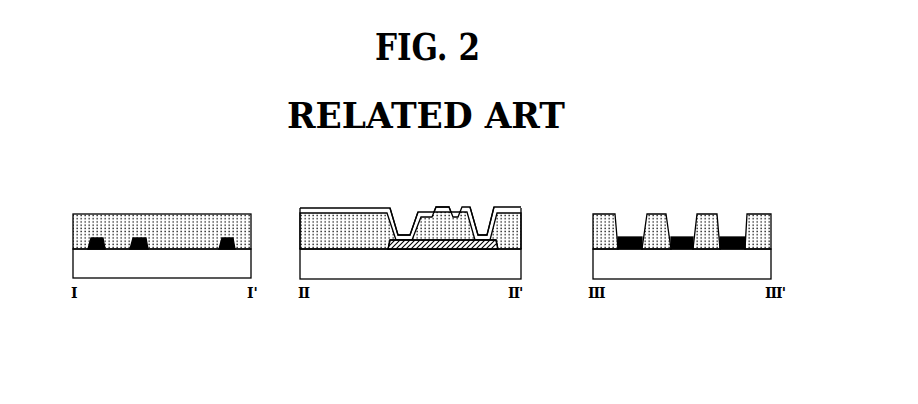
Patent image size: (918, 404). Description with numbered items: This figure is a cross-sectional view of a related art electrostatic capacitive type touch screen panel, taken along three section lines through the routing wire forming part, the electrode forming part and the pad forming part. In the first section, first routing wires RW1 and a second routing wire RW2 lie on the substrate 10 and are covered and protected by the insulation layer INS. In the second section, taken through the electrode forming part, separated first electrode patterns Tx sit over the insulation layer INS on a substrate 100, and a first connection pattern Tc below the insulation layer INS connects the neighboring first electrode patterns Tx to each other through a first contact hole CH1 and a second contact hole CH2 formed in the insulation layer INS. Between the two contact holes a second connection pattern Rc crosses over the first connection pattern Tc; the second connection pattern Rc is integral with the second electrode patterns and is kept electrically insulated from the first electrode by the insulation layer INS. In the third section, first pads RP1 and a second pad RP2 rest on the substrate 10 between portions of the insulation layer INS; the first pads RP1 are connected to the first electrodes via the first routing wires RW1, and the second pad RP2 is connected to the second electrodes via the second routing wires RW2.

The substrate 10 is at (162, 272).
The substrate 100 is at (372, 270).
The insulation layer INS is at (185, 218).
The first routing wire RW1 is at (98, 237).
The second routing wire RW2 is at (227, 237).
The first electrode pattern Tx is at (341, 209).
The first connection pattern Tc is at (427, 251).
The first contact hole CH1 is at (403, 219).
The second contact hole CH2 is at (483, 219).
The second connection pattern Rc is at (443, 206).
The first pad RP1 is at (682, 237).
The second pad RP2 is at (630, 237).